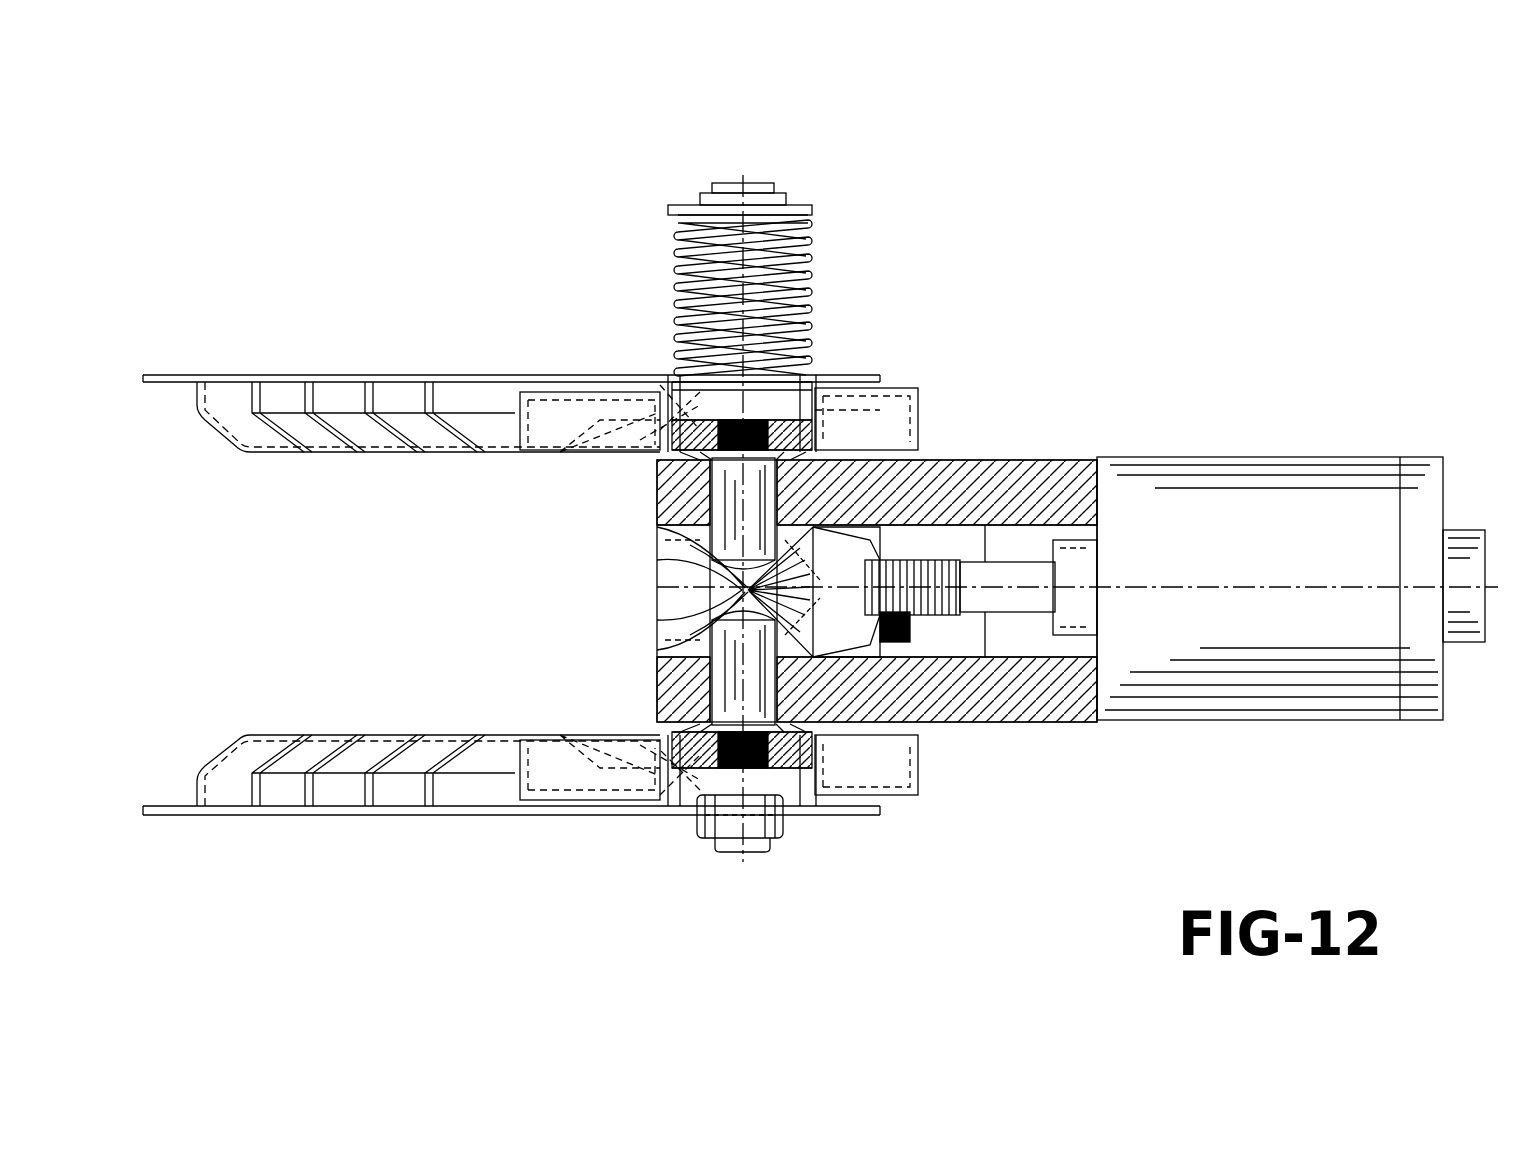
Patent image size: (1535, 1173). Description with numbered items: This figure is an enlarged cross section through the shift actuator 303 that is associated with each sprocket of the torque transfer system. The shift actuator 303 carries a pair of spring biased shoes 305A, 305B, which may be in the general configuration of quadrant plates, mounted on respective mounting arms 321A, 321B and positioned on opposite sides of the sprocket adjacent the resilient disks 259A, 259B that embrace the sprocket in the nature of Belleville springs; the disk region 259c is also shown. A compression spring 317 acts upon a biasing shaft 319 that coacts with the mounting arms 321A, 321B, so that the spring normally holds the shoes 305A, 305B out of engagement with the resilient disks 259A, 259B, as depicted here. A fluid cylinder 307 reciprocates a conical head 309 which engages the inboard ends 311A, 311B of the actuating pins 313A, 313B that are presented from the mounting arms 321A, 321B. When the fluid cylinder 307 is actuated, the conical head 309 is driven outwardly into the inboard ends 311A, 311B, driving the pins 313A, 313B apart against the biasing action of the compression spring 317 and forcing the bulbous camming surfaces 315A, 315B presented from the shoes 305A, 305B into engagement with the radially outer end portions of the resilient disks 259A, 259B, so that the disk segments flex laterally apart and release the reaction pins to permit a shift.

The shift actuator 303 is at (978, 393).
The shoe 305A is at (595, 400).
The shoe 305B is at (920, 770).
The fluid cylinder 307 is at (1205, 512).
The conical head 309 is at (745, 598).
The inboard end 311A is at (735, 565).
The inboard end 311B is at (740, 612).
The actuating pin 313A is at (735, 500).
The actuating pin 313B is at (735, 665).
The bulbous camming surface 315A is at (675, 378).
The bulbous camming surface 315B is at (700, 782).
The compression spring 317 is at (812, 327).
The biasing shaft 319 is at (762, 218).
The mounting arm 321A is at (835, 428).
The mounting arm 321B is at (770, 785).
The resilient disk 259A is at (318, 370).
The resilient disk 259B is at (318, 822).
The bus bar rib 259c is at (365, 750).